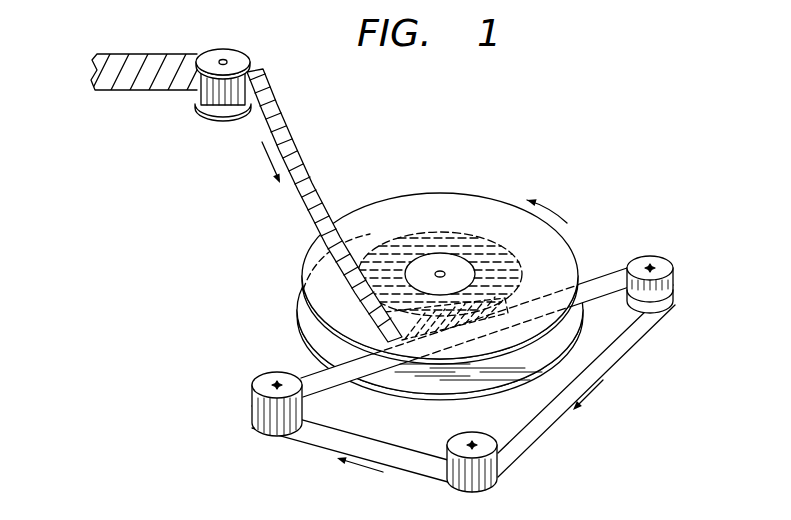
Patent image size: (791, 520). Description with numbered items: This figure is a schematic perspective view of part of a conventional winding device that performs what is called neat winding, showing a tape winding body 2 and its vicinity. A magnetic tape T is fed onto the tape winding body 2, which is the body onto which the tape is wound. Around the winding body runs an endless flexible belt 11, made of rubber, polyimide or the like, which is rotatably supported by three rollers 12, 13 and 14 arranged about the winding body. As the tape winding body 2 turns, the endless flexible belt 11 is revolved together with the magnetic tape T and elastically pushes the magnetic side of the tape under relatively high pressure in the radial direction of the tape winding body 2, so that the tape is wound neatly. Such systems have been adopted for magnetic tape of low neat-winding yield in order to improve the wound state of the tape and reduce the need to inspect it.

The magnetic tape T is at (293, 158).
The tape winding body 2 is at (465, 196).
The endless flexible belt 11 is at (304, 372).
The roller 12 is at (258, 383).
The roller 13 is at (660, 260).
The roller 14 is at (491, 433).